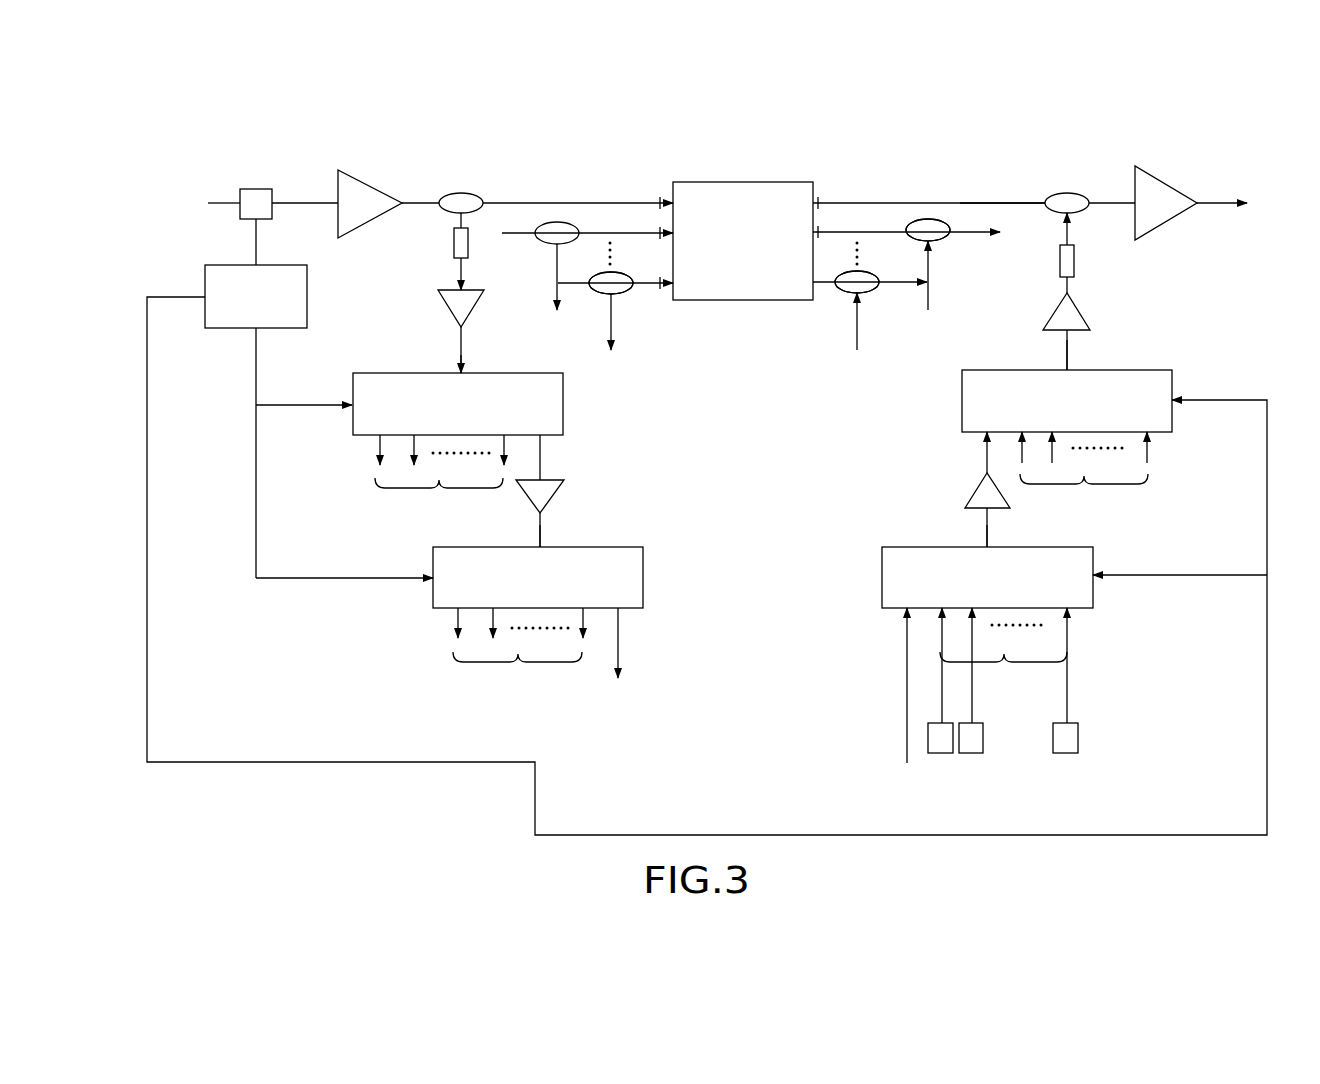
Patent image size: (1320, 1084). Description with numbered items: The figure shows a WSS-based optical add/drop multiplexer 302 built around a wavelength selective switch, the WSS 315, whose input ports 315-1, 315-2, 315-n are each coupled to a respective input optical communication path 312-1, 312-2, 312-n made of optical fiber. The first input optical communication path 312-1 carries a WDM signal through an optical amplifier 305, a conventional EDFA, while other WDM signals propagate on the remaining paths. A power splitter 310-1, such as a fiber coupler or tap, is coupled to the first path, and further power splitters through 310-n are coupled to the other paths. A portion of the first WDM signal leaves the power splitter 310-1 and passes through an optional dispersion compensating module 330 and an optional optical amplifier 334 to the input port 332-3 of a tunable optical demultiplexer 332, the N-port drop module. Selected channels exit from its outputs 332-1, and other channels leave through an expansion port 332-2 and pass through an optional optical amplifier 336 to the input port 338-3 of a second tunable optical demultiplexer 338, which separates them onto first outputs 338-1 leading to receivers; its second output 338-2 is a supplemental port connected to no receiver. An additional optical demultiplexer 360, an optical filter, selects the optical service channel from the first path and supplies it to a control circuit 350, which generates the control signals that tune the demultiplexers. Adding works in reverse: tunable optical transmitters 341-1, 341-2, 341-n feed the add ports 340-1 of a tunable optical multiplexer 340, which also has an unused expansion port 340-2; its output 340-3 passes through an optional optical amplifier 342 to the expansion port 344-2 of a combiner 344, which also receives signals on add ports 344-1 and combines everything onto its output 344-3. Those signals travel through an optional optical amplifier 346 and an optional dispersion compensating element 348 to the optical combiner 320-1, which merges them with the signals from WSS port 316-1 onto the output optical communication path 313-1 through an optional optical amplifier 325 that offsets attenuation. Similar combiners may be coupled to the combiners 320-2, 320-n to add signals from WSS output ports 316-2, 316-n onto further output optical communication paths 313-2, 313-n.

The WSS-based optical add/drop multiplexer 302 is at (466, 802).
The optical amplifier 305 is at (358, 180).
The power splitter 310-1 is at (448, 194).
The power splitter 310-n is at (618, 295).
The first input optical communication path 312-1 is at (592, 202).
The input optical communication path 312-2 is at (518, 232).
The input optical communication path 312-n is at (580, 285).
The output optical communication path 313-1 is at (990, 202).
The output optical communication path 313-2 is at (872, 228).
The output optical communication path 313-n is at (925, 294).
The WSS 315 is at (718, 182).
The input port 315-1 is at (668, 200).
The input port 315-2 is at (660, 240).
The input port 315-n is at (664, 286).
The port 316-1 is at (815, 200).
The WSS output port 316-2 is at (822, 228).
The WSS output port 316-n is at (840, 290).
The optical combiner 320-1 is at (1088, 195).
The combiner 320-2 is at (948, 240).
The combiner 320-n is at (853, 300).
The optical amplifier 325 is at (1170, 186).
The dispersion compensating module 330 is at (452, 256).
The tunable optical demultiplexer 332 is at (352, 388).
The outputs 332-1 is at (375, 487).
The expansion port 332-2 is at (540, 445).
The input port 332-3 is at (458, 366).
The optical amplifier 334 is at (443, 312).
The optical amplifier 336 is at (552, 497).
The tunable optical demultiplexer 338 is at (433, 600).
The first outputs 338-1 is at (462, 668).
The second output 338-2 is at (618, 625).
The input port 338-3 is at (540, 533).
The tunable optical multiplexer 340 is at (1093, 597).
The add ports 340-1 is at (1067, 658).
The expansion port 340-2 is at (905, 733).
The output 340-3 is at (987, 530).
The tunable optical transmitter 341-1 is at (953, 753).
The tunable optical transmitter 341-2 is at (983, 740).
The tunable optical transmitter 341-n is at (1078, 738).
The optical amplifier 342 is at (966, 500).
The combiner 344 is at (1172, 420).
The add ports 344-1 is at (1148, 480).
The expansion port 344-2 is at (987, 442).
The output 344-3 is at (1067, 350).
The optical amplifier 346 is at (1082, 312).
The dispersion compensating element 348 is at (1076, 272).
The control circuit 350 is at (204, 278).
The optical demultiplexer 360 is at (252, 189).